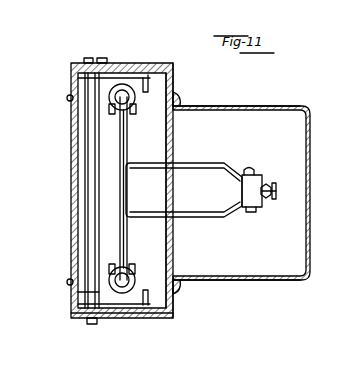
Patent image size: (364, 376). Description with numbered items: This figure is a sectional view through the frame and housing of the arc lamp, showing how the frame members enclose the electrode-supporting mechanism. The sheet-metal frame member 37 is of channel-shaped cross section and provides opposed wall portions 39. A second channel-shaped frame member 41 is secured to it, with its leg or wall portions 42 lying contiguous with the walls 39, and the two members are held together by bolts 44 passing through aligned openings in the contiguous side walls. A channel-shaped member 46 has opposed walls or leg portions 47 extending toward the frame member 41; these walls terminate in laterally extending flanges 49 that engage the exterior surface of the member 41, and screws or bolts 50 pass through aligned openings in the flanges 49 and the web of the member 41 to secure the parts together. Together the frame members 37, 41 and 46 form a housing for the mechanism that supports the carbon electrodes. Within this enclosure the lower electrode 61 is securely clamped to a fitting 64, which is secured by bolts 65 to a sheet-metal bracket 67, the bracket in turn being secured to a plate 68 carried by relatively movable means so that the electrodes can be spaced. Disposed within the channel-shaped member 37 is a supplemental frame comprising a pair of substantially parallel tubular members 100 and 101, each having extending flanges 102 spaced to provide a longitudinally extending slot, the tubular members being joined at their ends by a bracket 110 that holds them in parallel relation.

The frame member 37 is at (70, 106).
The opposed wall portions 39 is at (128, 64).
The second channel-shaped frame member 41 is at (180, 133).
The leg or wall portions 42 is at (105, 59).
The bolts 44 is at (88, 58).
The channel-shaped members 46 is at (292, 100).
The opposed walls or leg portions 47 is at (264, 107).
The laterally extending flanges 49 is at (173, 74).
The screws or bolts 50 is at (181, 90).
The lower electrode 61 is at (268, 185).
The fitting 64 is at (242, 188).
The bolts 65 is at (256, 210).
The bracket 67 is at (195, 215).
The plate 68 is at (127, 224).
The tubular member 100 is at (128, 318).
The tubular member 101 is at (135, 106).
The extending flanges 102 is at (136, 114).
The bracket 110 is at (80, 180).